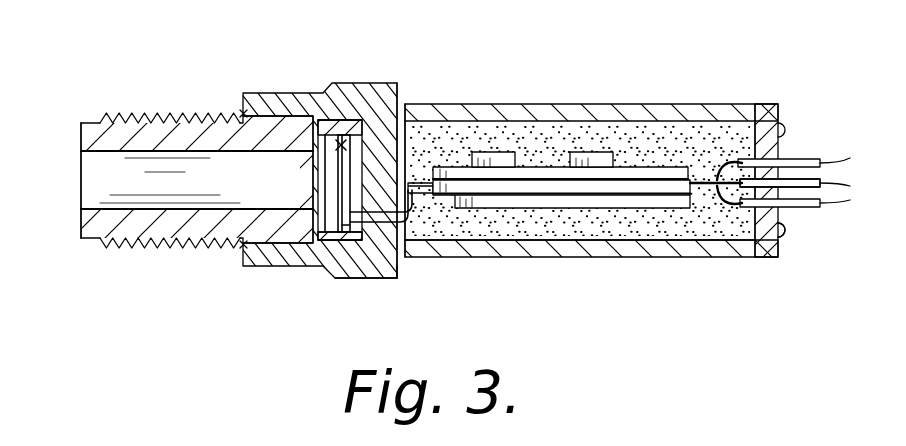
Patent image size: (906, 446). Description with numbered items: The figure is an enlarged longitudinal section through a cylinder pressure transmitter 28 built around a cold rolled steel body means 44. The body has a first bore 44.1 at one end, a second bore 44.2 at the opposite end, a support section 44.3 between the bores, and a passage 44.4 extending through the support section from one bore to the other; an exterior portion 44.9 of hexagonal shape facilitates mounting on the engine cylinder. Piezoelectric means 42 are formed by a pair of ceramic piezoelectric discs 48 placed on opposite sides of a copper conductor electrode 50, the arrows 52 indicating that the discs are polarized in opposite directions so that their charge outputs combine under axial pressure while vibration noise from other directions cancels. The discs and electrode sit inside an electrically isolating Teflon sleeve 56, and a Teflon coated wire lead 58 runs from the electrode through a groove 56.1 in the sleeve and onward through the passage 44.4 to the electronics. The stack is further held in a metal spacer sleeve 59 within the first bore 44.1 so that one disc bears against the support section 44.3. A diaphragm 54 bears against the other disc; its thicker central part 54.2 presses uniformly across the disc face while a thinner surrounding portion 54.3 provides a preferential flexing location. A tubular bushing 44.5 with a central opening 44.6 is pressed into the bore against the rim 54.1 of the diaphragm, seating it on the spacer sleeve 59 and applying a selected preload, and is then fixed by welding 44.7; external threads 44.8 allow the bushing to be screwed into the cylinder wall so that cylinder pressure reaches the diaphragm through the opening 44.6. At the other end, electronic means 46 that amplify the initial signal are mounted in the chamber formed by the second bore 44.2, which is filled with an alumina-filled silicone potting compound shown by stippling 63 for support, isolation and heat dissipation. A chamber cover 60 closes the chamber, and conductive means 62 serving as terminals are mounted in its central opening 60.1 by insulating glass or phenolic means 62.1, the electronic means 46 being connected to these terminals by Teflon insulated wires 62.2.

The cylinder pressure transmitter 28 is at (622, 62).
The piezoelectric means 42 is at (405, 118).
The body means 44 is at (650, 104).
The first bore 44.1 is at (243, 245).
The second bore 44.2 is at (737, 242).
The support section 44.3 is at (395, 165).
The passage 44.4 is at (397, 278).
The tubular bushing 44.5 is at (108, 128).
The central opening 44.6 is at (80, 160).
The welding 44.7 is at (243, 112).
The threads 44.8 is at (103, 243).
The exterior portion 44.9 is at (365, 279).
The electronic means 46 is at (648, 159).
The piezoelectric discs 48 is at (335, 208).
The conductor electrode 50 is at (392, 128).
The arrows 52 is at (330, 195).
The diaphragm 54 is at (335, 175).
The rim 54.1 is at (327, 140).
The central part 54.2 is at (318, 232).
The thinner portion 54.3 is at (330, 266).
The sleeve 56 is at (375, 158).
The groove 56.1 is at (378, 242).
The wire lead 58 is at (422, 222).
The metal spacer sleeve 59 is at (348, 147).
The chamber cover 60 is at (780, 112).
The central opening 60.1 is at (780, 221).
The conductive means 62 is at (855, 197).
The electrically insulating glass or phenolic means 62.1 is at (784, 150).
The Teflon insulated wires 62.2 is at (723, 180).
The stippling 63 is at (605, 132).